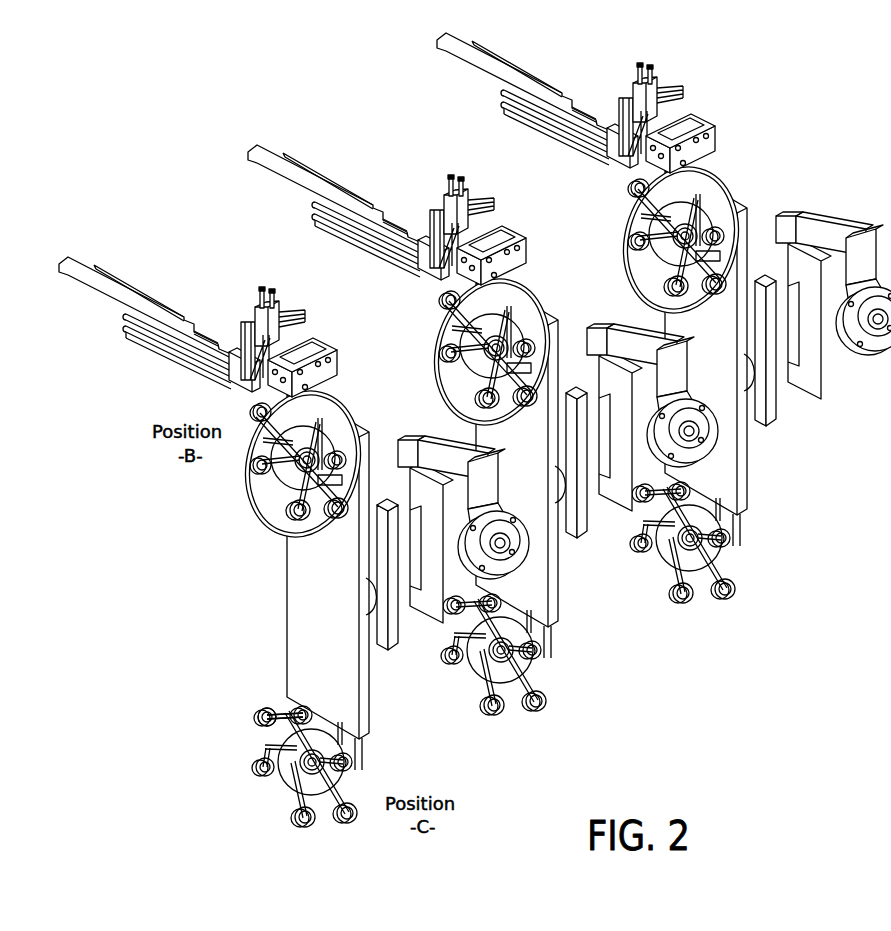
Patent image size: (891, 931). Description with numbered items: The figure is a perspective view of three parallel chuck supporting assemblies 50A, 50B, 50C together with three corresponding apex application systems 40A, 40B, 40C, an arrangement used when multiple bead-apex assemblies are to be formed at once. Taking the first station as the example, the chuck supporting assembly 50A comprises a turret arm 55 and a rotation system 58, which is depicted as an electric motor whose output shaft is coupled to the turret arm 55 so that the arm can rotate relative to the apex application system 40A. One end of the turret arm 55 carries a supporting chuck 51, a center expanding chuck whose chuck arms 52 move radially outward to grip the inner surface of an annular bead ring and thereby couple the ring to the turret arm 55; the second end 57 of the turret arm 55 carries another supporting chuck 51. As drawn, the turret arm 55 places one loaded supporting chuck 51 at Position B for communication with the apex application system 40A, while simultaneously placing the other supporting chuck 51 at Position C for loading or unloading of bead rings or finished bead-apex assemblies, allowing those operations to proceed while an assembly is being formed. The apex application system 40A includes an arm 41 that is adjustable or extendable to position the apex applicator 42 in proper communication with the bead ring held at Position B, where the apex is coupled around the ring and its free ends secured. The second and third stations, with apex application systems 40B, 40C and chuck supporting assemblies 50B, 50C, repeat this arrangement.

The apex application system 40A is at (182, 297).
The apex application system 40B is at (348, 170).
The apex application system 40C is at (546, 68).
The arm 41 is at (147, 283).
The apex applicator 42 is at (333, 352).
The chuck supporting assembly 50A is at (314, 770).
The chuck supporting assembly 50B is at (520, 723).
The chuck supporting assembly 50C is at (707, 622).
The supporting chuck 51 is at (287, 484).
The chuck arms 52 is at (278, 712).
The turret arm 55 is at (310, 564).
The second end 57 is at (330, 562).
The rotation system 58 is at (406, 595).